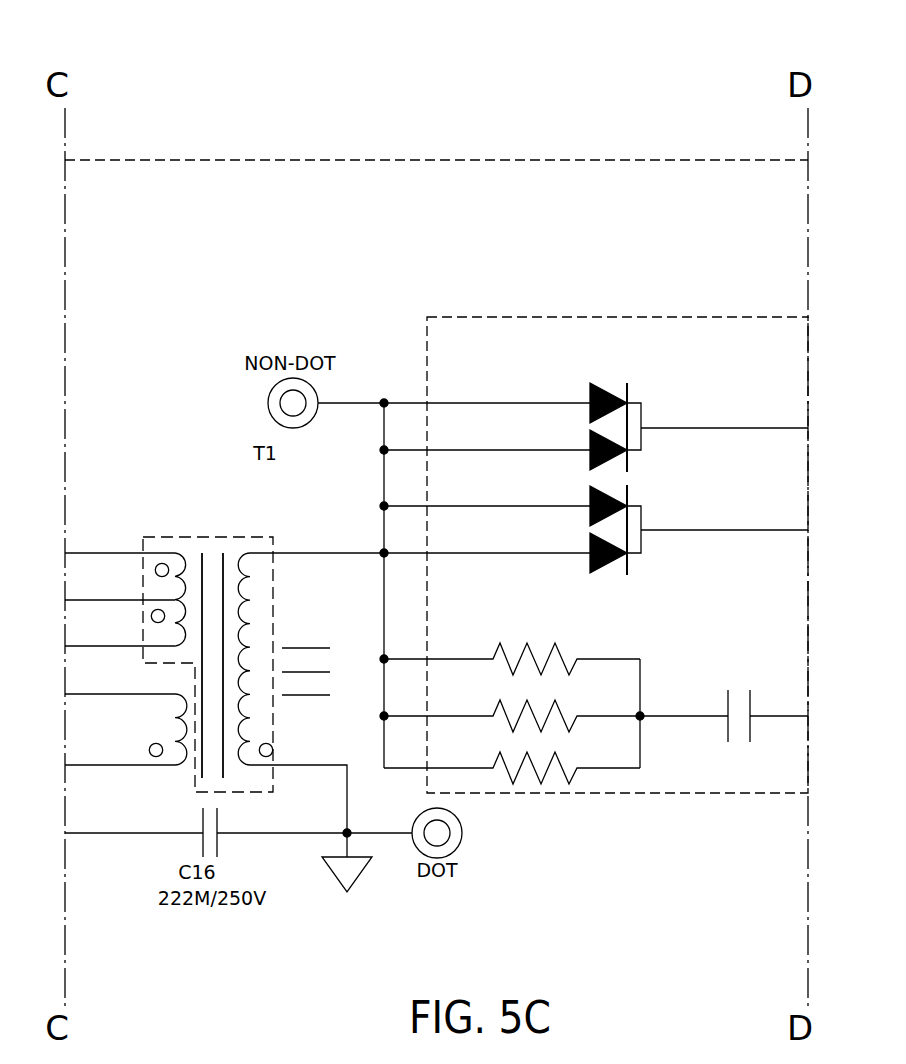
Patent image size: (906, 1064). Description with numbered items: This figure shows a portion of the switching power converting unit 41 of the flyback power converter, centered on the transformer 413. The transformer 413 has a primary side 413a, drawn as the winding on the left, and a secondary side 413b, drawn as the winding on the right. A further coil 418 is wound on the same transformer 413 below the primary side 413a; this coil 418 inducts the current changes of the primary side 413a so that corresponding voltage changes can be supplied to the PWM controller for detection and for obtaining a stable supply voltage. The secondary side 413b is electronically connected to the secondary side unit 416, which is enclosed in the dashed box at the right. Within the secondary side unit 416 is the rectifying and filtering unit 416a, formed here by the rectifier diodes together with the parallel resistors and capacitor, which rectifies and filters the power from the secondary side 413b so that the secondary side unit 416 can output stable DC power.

The switching power converting unit 41 is at (338, 160).
The transformer 413 is at (206, 632).
The primary side 413a is at (157, 553).
The secondary side 413b is at (253, 553).
The secondary side unit 416 is at (563, 317).
The rectifying and filtering unit 416a is at (700, 352).
The coil 418 is at (178, 765).